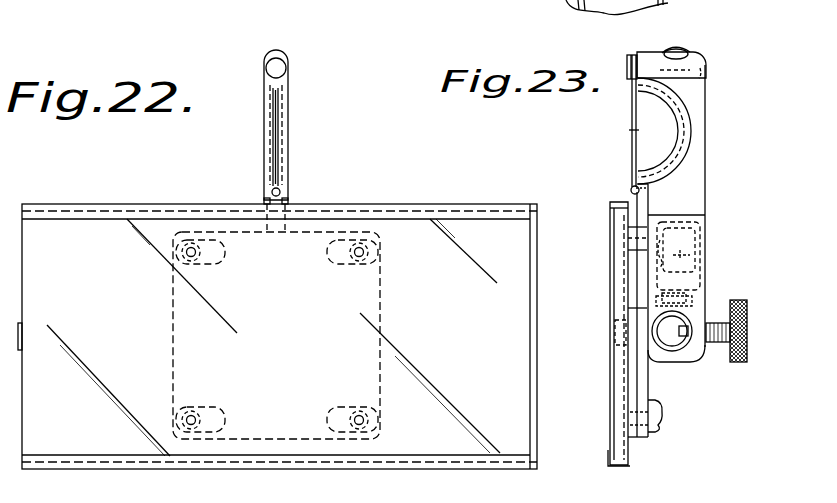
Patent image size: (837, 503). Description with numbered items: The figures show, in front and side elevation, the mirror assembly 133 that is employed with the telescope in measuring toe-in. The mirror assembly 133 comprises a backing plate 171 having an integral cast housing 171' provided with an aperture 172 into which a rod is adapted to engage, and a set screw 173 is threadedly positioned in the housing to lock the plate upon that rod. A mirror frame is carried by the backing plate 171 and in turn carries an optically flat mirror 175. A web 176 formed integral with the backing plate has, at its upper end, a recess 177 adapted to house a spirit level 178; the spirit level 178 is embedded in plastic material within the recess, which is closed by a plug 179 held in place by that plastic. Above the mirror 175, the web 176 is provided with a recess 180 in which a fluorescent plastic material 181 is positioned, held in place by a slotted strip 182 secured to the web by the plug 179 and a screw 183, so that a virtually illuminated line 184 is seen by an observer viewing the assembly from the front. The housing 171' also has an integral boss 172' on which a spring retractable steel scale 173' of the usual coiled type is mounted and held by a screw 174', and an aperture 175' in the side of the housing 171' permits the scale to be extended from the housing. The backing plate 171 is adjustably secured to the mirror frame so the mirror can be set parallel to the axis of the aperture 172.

In FIG. 23, the mirror assembly 133 is at (722, 179).
In FIG. 22, the backing plate 171 is at (277, 336).
In FIG. 23, the backing plate 171 is at (674, 403).
In FIG. 23, the cast housing 171' is at (722, 223).
In FIG. 23, the aperture 172 is at (713, 305).
In FIG. 23, the boss 172' is at (725, 234).
In FIG. 23, the set screw 173 is at (750, 322).
In FIG. 23, the spring retractable steel scale 173' is at (722, 211).
In FIG. 23, the screw 174' is at (717, 270).
In FIG. 23, the optically flat mirror 175 is at (591, 334).
In FIG. 23, the aperture 175' is at (600, 324).
In FIG. 23, the web 176 is at (706, 125).
In FIG. 23, the recess 177 is at (708, 62).
In FIG. 23, the spirit level 178 is at (682, 50).
In FIG. 23, the plug 179 is at (627, 61).
In FIG. 23, the recess 180 is at (684, 108).
In FIG. 22, the fluorescent plastic material 181 is at (283, 133).
In FIG. 23, the fluorescent plastic material 181 is at (650, 115).
In FIG. 22, the slotted strip 182 is at (283, 92).
In FIG. 23, the slotted strip 182 is at (632, 130).
In FIG. 22, the screw 183 is at (280, 193).
In FIG. 23, the screw 183 is at (631, 190).
In FIG. 22, the illuminated line 184 is at (276, 125).